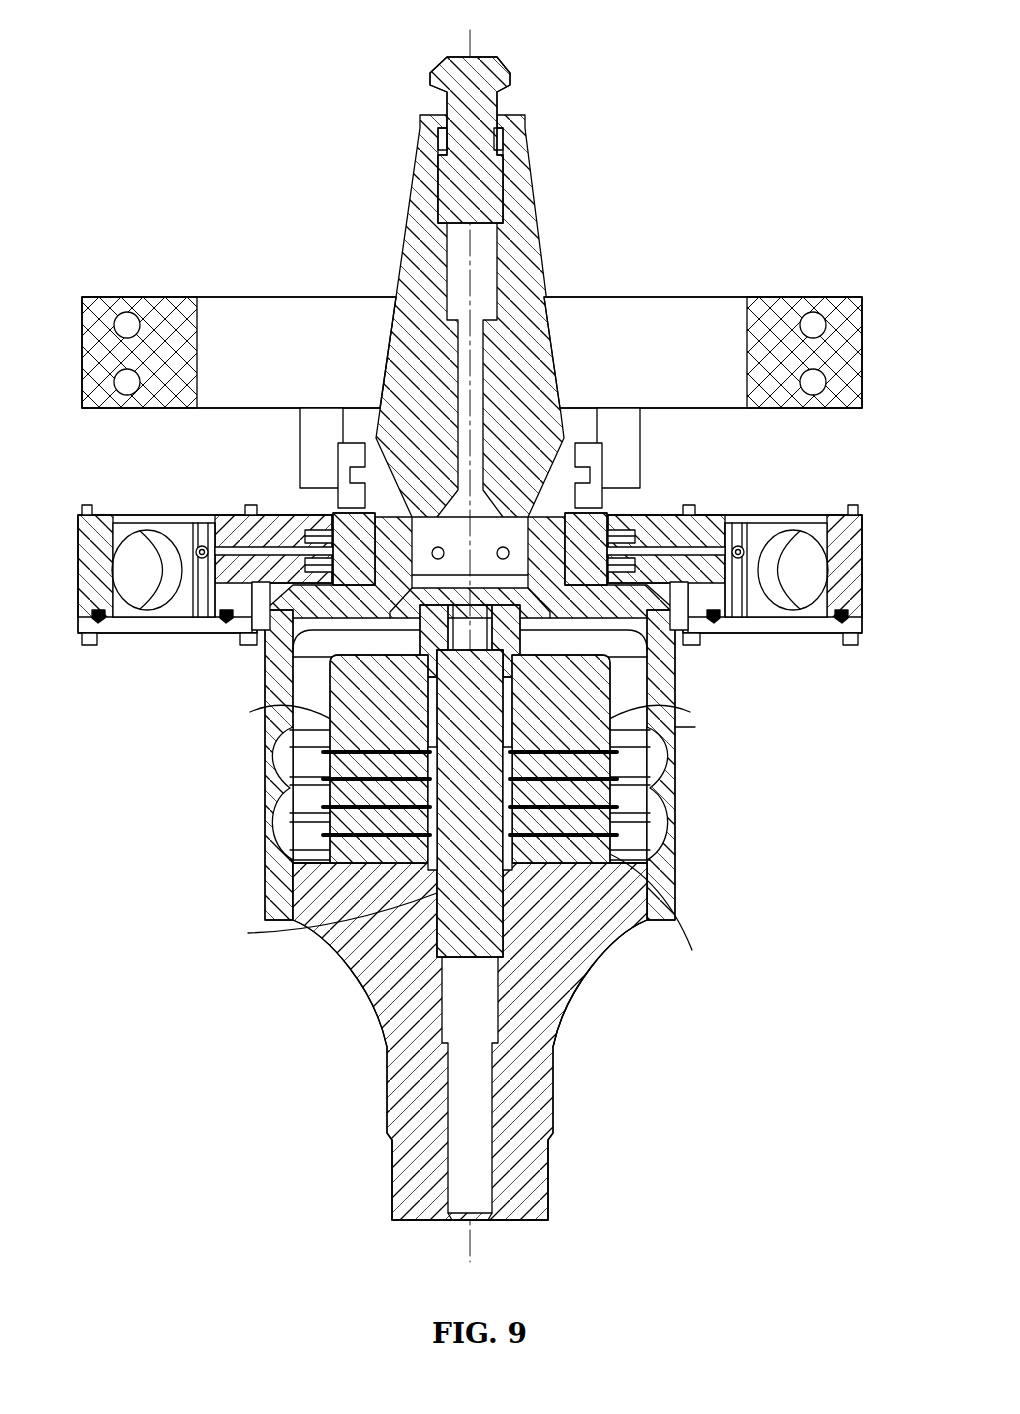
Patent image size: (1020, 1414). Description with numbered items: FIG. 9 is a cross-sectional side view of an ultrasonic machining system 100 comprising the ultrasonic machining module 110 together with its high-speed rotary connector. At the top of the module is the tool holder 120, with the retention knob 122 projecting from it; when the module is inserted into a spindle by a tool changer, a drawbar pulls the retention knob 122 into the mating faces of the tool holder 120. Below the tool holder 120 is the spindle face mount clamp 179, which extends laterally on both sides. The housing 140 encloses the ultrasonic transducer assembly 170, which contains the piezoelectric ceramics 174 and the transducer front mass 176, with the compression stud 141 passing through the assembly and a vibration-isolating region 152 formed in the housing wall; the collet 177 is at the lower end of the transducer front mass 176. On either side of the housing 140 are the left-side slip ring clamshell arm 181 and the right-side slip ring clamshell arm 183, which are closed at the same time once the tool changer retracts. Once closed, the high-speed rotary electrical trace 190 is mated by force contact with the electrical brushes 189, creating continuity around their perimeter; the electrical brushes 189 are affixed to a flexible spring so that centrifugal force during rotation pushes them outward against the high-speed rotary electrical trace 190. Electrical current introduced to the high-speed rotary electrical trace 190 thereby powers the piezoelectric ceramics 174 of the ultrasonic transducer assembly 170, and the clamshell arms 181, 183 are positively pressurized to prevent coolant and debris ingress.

The tool assembly 100 is at (490, 631).
The ultrasonic machining module 110 is at (692, 873).
The tool holder 120 is at (552, 206).
The retention knob 122 is at (468, 62).
The housing 140 is at (680, 727).
The compression stud 141 is at (405, 893).
The vibration-isolating region 152 is at (694, 797).
The ultrasonic transducer assembly 170 is at (338, 960).
The piezoelectric ceramics 174 is at (425, 750).
The transducer front mass 176 is at (596, 965).
The collet 177 is at (552, 1175).
The spindle face mount clamp 179 is at (313, 371).
The left-side slip ring clamshell arm 181 is at (157, 633).
The right-side slip ring clamshell arm 183 is at (803, 637).
The electrical brush 189 is at (612, 527).
The high-speed rotary electrical trace 190 is at (315, 520).